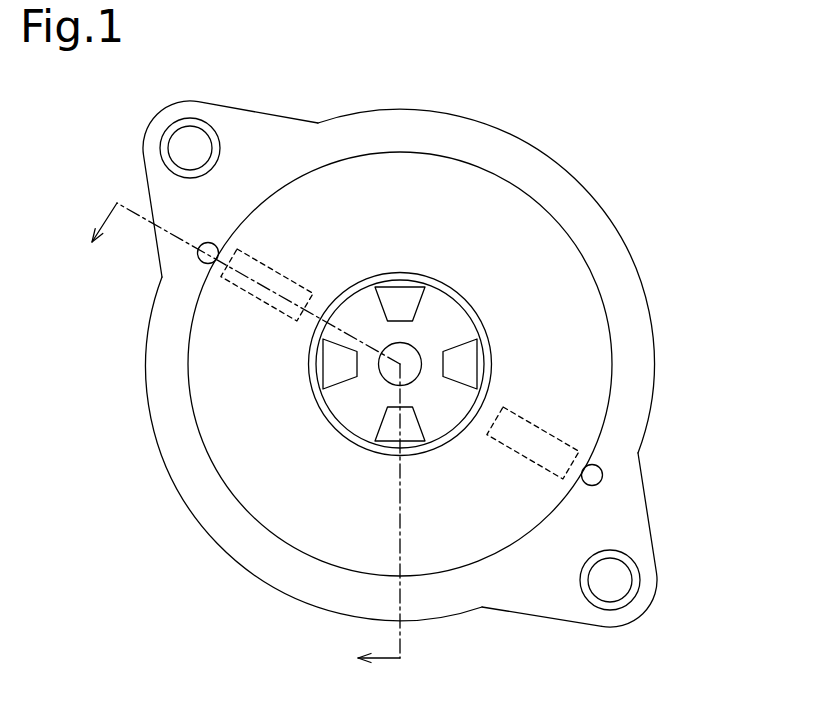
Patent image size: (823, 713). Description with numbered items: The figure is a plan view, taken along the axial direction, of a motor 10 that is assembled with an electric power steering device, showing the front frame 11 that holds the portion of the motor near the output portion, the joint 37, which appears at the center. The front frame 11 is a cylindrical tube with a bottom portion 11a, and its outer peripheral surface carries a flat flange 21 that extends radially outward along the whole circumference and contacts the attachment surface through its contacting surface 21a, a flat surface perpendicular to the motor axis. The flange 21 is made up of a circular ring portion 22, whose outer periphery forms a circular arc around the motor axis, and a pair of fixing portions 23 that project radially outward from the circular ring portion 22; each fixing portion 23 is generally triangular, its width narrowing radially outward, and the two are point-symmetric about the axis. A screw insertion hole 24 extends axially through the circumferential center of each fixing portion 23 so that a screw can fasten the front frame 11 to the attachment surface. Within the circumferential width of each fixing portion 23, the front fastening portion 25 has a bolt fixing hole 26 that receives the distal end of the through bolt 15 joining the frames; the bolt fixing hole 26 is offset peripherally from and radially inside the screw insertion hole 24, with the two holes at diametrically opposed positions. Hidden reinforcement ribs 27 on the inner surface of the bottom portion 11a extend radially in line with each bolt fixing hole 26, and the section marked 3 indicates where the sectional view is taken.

The motor 10 is at (672, 143).
The front frame 11 is at (528, 142).
The bottom portion 11a is at (354, 364).
The through bolt 15 is at (208, 243).
The flange 21 is at (625, 246).
The contacting surface 21a is at (522, 601).
The circular ring portion 22 is at (182, 426).
The fixing portion 23 is at (167, 181).
The screw insertion hole 24 is at (172, 145).
The front fastening portion 25 is at (435, 337).
The bolt fixing hole 26 is at (435, 337).
The reinforcement rib 27 is at (278, 266).
The joint 37 is at (365, 403).
The section line III-III 3 is at (237, 438).